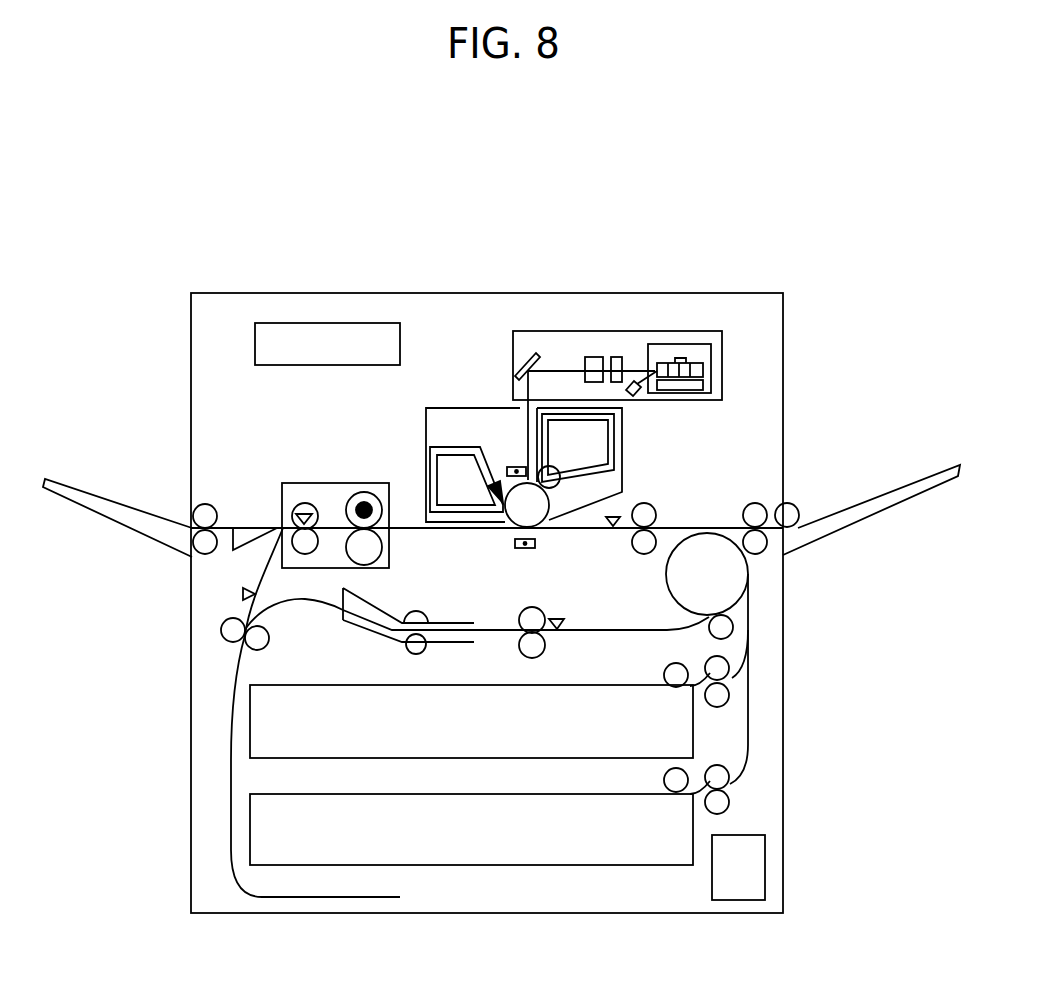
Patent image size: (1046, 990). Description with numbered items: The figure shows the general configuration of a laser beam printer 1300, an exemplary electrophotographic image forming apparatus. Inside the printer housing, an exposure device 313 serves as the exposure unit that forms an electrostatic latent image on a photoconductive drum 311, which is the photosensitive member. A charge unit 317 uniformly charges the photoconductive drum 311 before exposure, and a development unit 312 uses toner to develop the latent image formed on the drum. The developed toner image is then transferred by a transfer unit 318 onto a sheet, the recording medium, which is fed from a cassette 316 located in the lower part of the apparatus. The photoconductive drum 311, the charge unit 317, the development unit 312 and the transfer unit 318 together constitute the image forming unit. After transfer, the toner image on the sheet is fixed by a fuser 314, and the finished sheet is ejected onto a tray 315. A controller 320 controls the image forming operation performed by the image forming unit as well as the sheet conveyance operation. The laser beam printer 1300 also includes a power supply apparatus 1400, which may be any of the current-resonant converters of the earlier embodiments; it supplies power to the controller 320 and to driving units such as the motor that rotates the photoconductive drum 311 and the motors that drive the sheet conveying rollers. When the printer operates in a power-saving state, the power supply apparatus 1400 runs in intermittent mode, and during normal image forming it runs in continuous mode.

The laser beam printer 1300 is at (672, 292).
The exposure device 313 is at (723, 367).
The controller 320 is at (305, 367).
The fuser 314 is at (337, 482).
The charge unit 317 is at (522, 465).
The development unit 312 is at (557, 473).
The photoconductive drum 311 is at (535, 510).
The tray 315 is at (103, 507).
The transfer unit 318 is at (535, 543).
The cassette 316 is at (675, 845).
The power supply apparatus 1400 is at (712, 868).